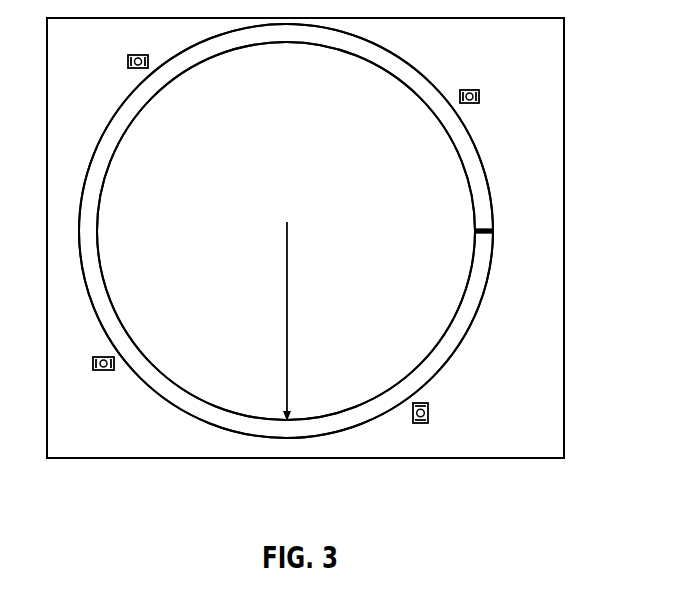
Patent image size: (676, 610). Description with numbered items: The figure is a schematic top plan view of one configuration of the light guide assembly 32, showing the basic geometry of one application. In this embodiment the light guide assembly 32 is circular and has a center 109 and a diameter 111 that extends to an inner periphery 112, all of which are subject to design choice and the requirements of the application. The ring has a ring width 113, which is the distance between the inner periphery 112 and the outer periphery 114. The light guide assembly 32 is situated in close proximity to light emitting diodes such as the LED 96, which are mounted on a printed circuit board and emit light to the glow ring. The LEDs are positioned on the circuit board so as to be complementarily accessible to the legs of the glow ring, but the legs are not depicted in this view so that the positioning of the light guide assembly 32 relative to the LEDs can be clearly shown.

The light guide assembly 32 is at (429, 75).
The light emitting diode 96 is at (420, 428).
The center 109 is at (287, 222).
The diameter 111 is at (287, 355).
The inner periphery 112 is at (195, 392).
The ring width 113 is at (484, 228).
The outer periphery 114 is at (227, 430).